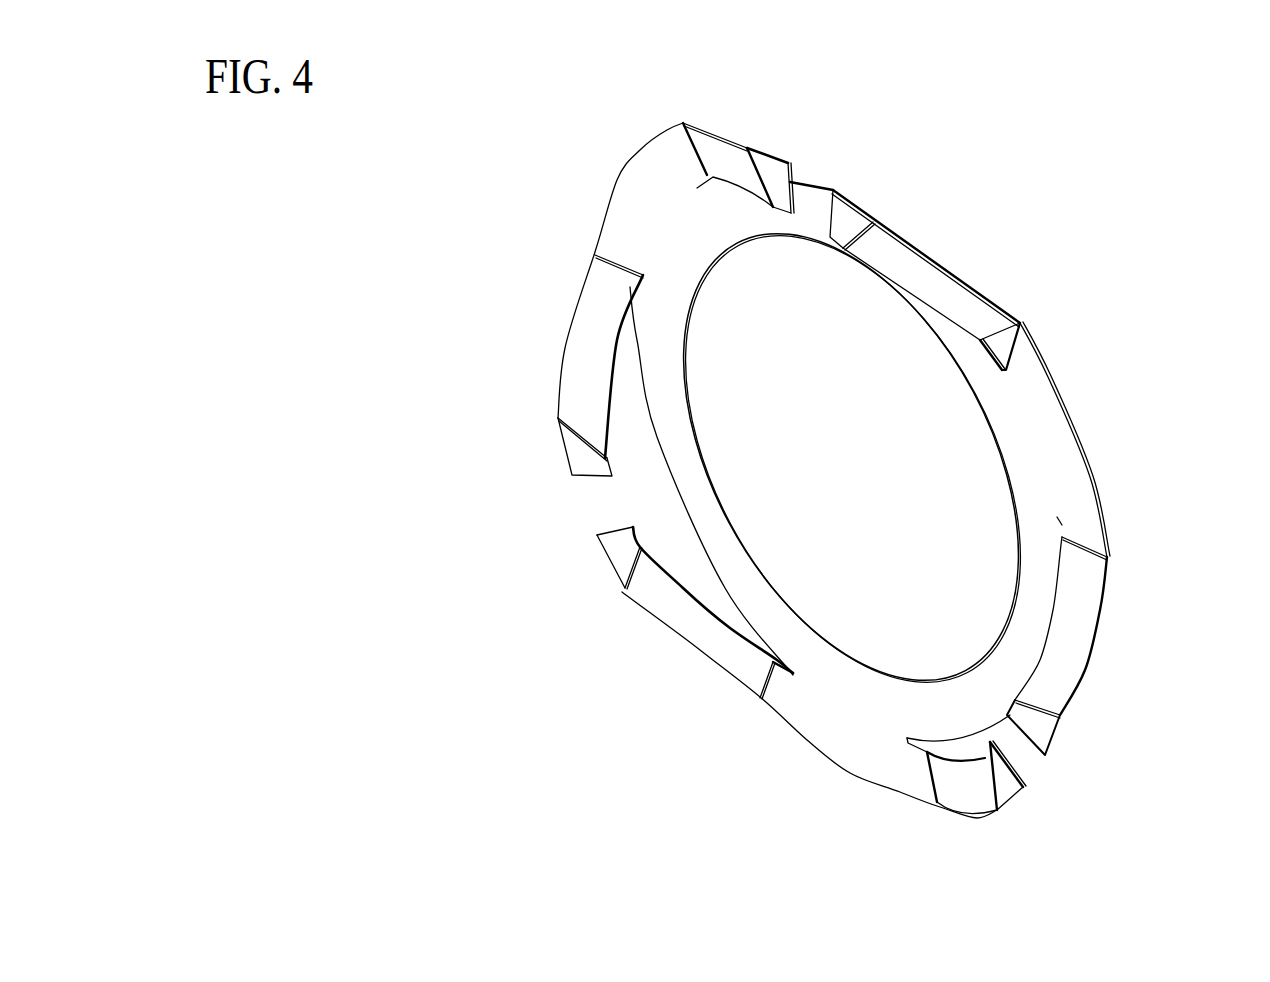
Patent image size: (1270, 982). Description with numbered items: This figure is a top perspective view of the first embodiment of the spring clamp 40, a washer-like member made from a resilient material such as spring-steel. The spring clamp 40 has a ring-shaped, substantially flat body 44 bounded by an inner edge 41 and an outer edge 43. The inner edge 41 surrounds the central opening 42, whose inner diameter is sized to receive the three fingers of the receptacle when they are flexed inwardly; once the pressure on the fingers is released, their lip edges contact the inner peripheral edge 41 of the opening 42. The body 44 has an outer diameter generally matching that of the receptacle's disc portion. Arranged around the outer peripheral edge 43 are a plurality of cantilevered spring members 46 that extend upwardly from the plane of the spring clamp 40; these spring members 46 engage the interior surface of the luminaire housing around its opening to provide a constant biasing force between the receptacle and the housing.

The spring clamp 40 is at (390, 288).
The inner peripheral edge 41 is at (960, 387).
The central opening 42 is at (807, 390).
The outer edge 43 is at (852, 772).
The body 44 is at (1060, 443).
The cantilevered spring members 46 is at (840, 217).